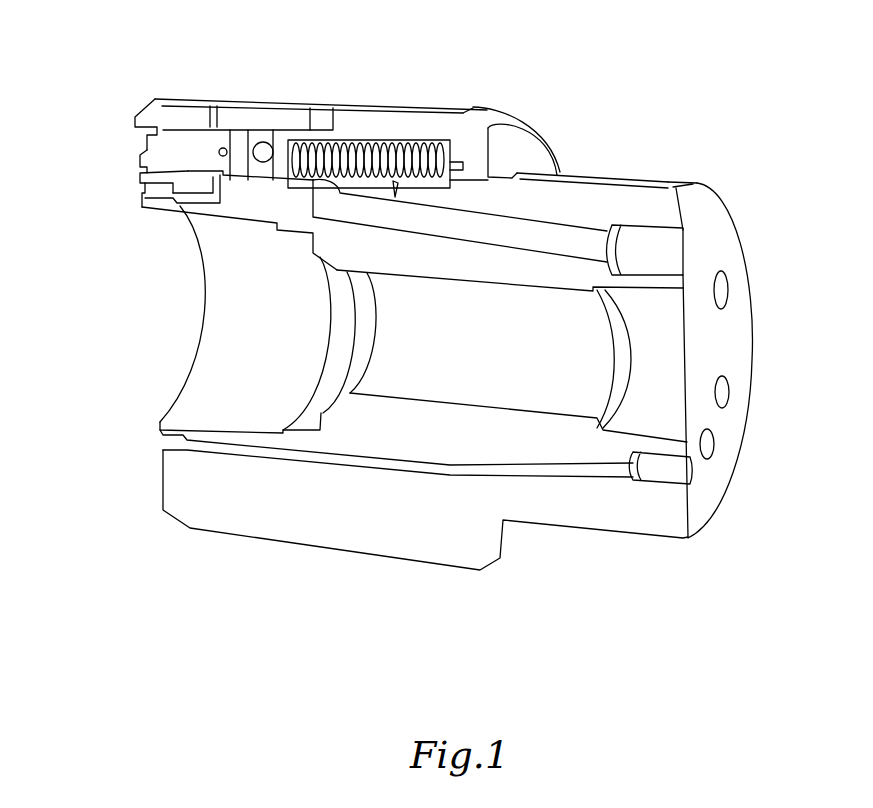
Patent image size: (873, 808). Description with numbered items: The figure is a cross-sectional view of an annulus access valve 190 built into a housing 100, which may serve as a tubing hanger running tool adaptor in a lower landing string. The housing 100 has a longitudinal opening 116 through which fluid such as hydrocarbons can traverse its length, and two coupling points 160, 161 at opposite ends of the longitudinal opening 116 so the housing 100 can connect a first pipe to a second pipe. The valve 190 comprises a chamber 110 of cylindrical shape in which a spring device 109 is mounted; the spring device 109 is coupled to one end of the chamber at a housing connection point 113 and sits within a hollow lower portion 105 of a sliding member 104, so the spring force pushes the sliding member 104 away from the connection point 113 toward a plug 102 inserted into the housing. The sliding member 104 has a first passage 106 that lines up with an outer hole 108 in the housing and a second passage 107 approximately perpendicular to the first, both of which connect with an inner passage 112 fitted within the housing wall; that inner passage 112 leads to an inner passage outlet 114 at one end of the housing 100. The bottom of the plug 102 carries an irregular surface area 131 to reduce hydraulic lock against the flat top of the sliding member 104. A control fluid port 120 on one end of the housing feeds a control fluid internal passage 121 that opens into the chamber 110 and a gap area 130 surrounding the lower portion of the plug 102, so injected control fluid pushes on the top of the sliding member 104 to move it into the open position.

The housing 100 is at (323, 540).
The plug 102 is at (148, 148).
The sliding member 104 is at (240, 138).
The hollow lower portion 105 is at (365, 140).
The first passage 106 is at (262, 142).
The second passage 107 is at (240, 157).
The outer hole 108 is at (316, 112).
The spring device 109 is at (405, 157).
The chamber 110 is at (435, 160).
The inner passage 112 is at (548, 234).
The housing connection point 113 is at (462, 167).
The inner passage outlet 114 is at (684, 253).
The longitudinal opening 116 is at (664, 338).
The control fluid port 120 is at (153, 180).
The control fluid internal passage 121 is at (206, 200).
The gap area 130 is at (173, 123).
The irregular surface area 131 is at (155, 186).
The coupling point 160 is at (204, 329).
The coupling point 161 is at (709, 367).
The annulus access valve 190 is at (395, 182).